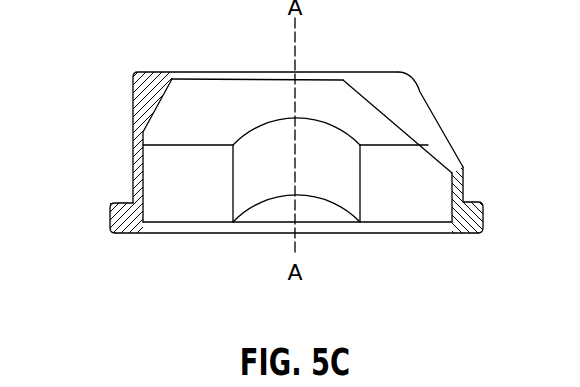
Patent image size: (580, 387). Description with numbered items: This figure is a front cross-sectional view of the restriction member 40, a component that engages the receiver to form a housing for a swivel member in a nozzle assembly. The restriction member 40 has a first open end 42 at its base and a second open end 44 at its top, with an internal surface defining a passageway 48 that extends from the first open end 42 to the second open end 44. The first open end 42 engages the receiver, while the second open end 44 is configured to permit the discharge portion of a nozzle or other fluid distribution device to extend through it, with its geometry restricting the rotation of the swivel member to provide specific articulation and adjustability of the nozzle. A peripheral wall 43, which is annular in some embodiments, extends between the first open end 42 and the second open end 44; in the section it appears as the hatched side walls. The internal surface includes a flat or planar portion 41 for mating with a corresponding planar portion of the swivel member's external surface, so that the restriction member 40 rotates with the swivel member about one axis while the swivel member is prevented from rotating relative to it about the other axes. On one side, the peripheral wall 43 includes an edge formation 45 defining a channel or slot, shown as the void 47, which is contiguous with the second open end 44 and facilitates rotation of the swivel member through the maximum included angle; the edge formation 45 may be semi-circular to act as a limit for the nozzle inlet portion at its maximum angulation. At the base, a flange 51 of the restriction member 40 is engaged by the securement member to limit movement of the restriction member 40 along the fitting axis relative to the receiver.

The restriction member 40 is at (133, 120).
The planar portion 41 is at (318, 172).
The first open end 42 is at (230, 259).
The peripheral wall 43 is at (133, 175).
The second open end 44 is at (204, 41).
The edge formation 45 is at (440, 128).
The void 47 is at (431, 71).
The passageway 48 is at (174, 186).
The flange 51 is at (467, 223).